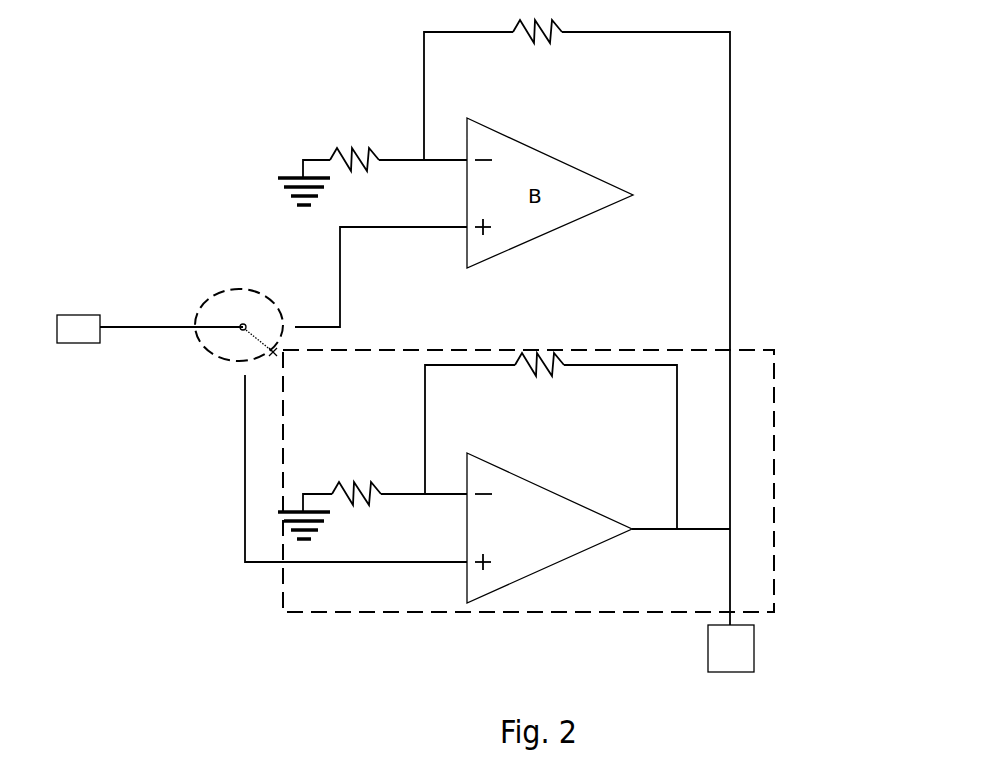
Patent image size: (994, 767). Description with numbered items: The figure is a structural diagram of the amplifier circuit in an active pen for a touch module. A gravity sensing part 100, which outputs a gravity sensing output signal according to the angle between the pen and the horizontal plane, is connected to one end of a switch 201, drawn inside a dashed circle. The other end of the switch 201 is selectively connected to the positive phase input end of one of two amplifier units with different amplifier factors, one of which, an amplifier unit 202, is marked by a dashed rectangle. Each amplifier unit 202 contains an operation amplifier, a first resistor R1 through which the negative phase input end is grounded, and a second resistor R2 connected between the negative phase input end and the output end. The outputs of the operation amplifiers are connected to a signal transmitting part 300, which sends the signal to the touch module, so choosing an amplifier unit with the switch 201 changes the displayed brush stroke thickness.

The gravity sensing part 100 is at (150, 353).
The switch 201 is at (205, 305).
The amplifier unit 202 is at (562, 481).
The signal transmitting part 300 is at (767, 648).
The first resistor R1 is at (399, 482).
The second resistor R2 is at (551, 441).